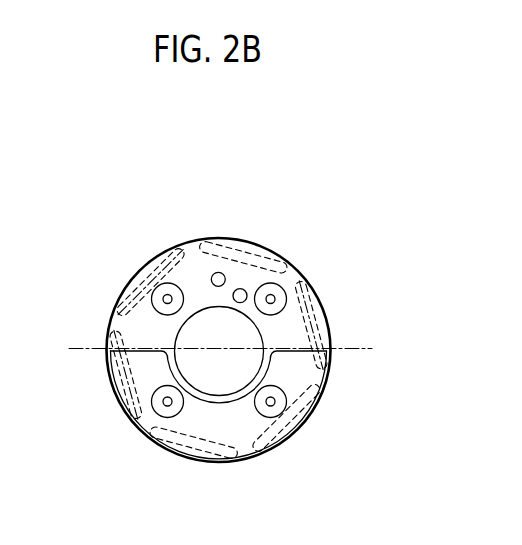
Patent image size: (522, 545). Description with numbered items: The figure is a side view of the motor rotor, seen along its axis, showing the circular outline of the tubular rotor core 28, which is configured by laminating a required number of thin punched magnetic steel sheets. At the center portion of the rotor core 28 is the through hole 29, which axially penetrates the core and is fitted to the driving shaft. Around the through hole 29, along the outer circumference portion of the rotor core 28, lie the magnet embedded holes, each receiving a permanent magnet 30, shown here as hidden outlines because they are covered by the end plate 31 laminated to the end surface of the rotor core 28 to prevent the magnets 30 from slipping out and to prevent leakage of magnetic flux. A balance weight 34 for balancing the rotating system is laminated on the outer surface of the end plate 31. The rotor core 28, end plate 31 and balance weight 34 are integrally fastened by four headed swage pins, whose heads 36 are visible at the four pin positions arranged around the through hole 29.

The rotor core 28 is at (156, 251).
The through hole 29 is at (227, 373).
The permanent magnet 30 is at (142, 289).
The end plate 31 is at (241, 277).
The balance weight 34 is at (198, 420).
The head 36 is at (151, 394).